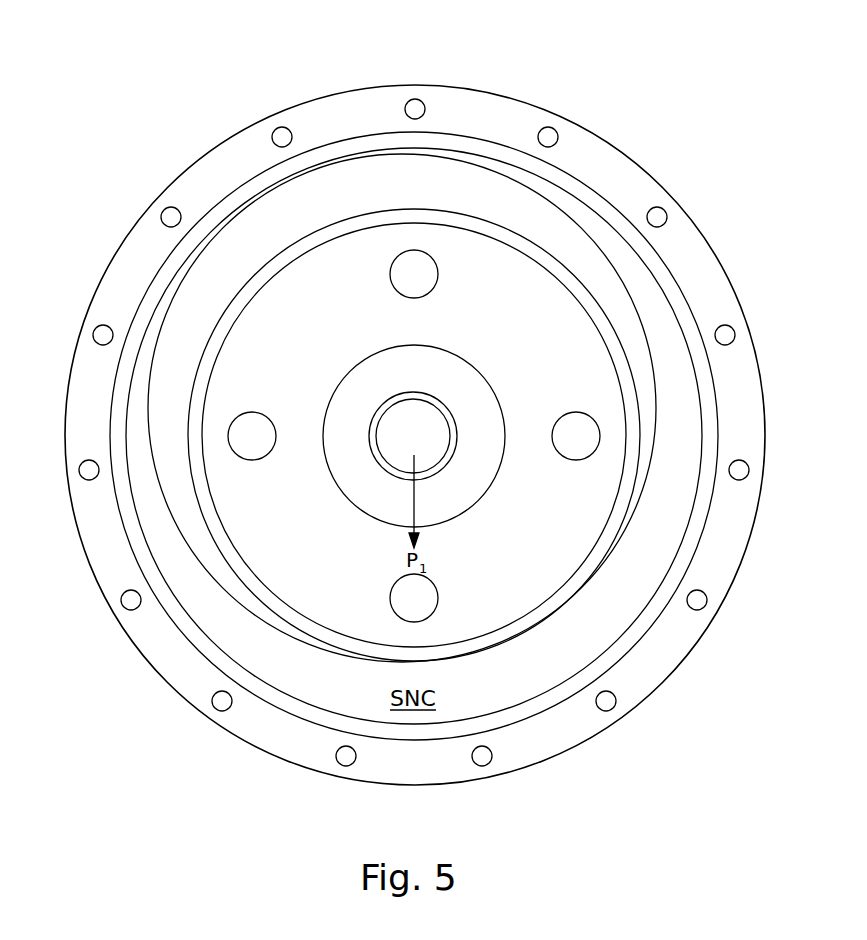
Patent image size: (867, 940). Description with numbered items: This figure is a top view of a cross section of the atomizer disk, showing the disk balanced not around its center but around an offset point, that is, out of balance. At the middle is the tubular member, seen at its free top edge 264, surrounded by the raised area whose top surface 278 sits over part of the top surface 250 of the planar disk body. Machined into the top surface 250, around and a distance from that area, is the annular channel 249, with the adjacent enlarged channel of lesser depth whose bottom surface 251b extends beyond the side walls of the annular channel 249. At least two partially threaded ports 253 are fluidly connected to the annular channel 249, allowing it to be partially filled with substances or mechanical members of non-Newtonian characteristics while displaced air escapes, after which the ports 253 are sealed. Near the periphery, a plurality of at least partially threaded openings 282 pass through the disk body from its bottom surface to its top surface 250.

The top surface 250 is at (210, 160).
The bottom surface of enlarged channel 251b is at (375, 138).
The at least partially threaded openings 282 is at (656, 207).
The annular channel 249 is at (258, 250).
The ports 253 is at (420, 270).
The top surface of area 278 is at (470, 475).
The free top edge 264 is at (445, 412).